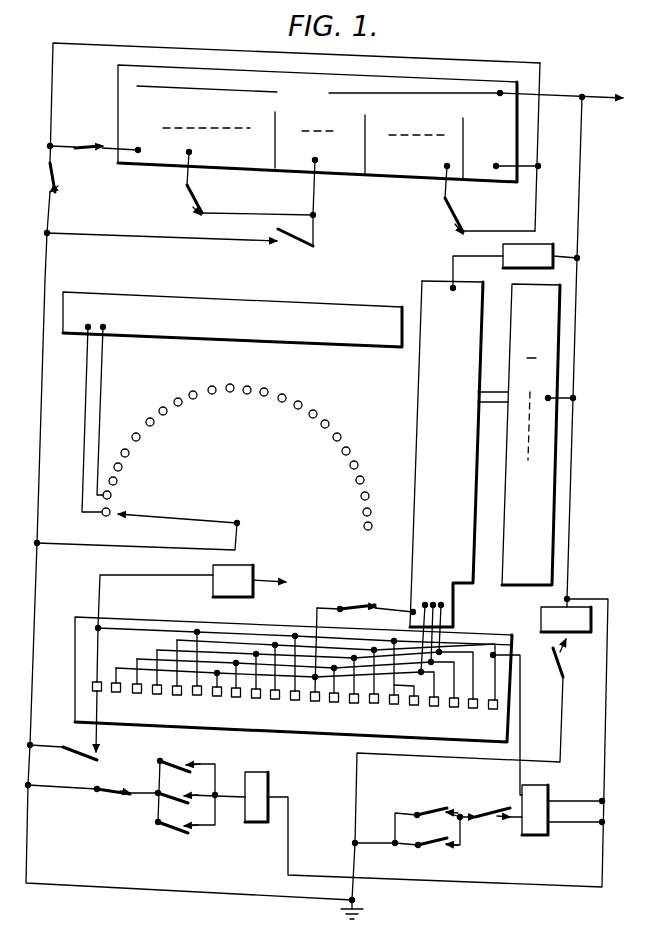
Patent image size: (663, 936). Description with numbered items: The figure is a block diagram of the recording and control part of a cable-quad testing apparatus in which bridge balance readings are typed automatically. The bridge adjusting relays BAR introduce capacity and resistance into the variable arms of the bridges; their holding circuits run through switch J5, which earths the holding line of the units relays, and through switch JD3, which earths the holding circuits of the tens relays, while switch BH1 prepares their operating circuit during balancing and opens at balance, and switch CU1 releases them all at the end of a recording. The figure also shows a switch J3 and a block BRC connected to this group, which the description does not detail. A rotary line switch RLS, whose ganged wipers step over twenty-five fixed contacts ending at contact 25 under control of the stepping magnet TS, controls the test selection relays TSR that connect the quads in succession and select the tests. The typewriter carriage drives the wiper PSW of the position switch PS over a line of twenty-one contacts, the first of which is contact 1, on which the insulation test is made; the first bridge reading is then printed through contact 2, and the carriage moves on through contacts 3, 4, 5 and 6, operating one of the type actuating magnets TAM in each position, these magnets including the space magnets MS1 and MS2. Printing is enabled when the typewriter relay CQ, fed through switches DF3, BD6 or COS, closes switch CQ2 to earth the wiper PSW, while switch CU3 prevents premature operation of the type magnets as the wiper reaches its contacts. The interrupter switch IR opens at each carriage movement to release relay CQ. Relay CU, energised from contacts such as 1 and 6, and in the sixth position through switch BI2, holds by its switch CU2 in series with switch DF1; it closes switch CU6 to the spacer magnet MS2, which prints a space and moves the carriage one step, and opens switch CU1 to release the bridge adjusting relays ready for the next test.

The bridge adjusting relays BAR is at (317, 123).
The switch of transferring relay J J5 is at (94, 139).
The switch of relay CU CU1 is at (73, 176).
The switch J3 is at (235, 184).
The switch of relay BH BH1 is at (179, 249).
The switch of relay JD JD3 is at (472, 199).
The space magnet MS1 is at (515, 267).
The test selection relays TSR is at (232, 319).
The counter BRC is at (459, 476).
The type actuating magnets TAM is at (539, 434).
The rotary line switch RLS is at (204, 519).
The stepping magnet TS is at (192, 596).
The switch of relay CU CU3 is at (366, 601).
The position switch PS is at (503, 733).
The position switch wiper PSW is at (96, 694).
The spacer magnet MS2 is at (438, 742).
The switch of relay CU CU6 is at (475, 769).
The switch of typewriter relay CQ CQ2 is at (63, 745).
The interrupter switch IR is at (92, 801).
The switch of relay DF DF3 is at (180, 758).
The switch of relay BD BD6 is at (178, 788).
The typewriter magnet operating switch COS is at (175, 837).
The typewriter relay CQ is at (256, 797).
The switch of relay DF DF1 is at (436, 803).
The switch of relay BI BI2 is at (434, 855).
The switch of relay CU CU2 is at (492, 826).
The relay CU is at (563, 810).
The first contact of position switch 1 is at (102, 608).
The second contact of position switch 2 is at (113, 600).
The third contact of position switch 3 is at (125, 594).
The fourth contact of position switch 4 is at (138, 587).
The fifth contact of position switch 5 is at (151, 581).
The sixth contact of position switch 6 is at (167, 573).
The last contact of rotary line switch level 25 is at (356, 527).